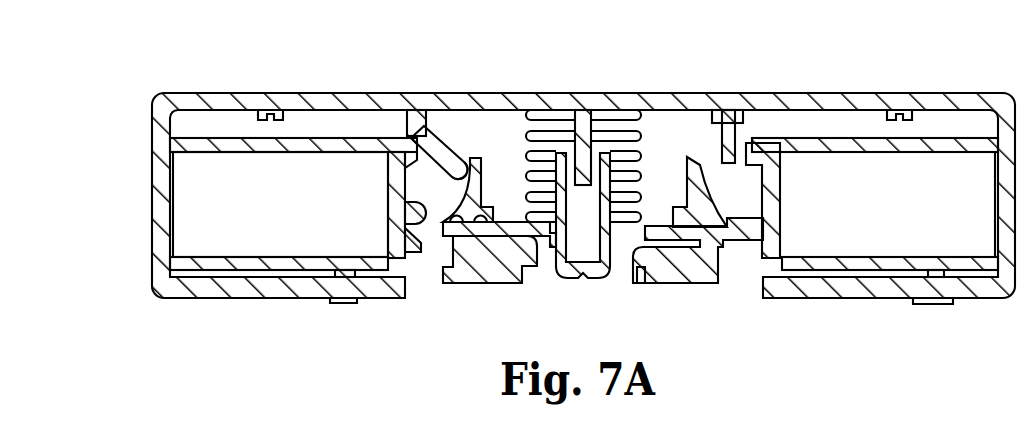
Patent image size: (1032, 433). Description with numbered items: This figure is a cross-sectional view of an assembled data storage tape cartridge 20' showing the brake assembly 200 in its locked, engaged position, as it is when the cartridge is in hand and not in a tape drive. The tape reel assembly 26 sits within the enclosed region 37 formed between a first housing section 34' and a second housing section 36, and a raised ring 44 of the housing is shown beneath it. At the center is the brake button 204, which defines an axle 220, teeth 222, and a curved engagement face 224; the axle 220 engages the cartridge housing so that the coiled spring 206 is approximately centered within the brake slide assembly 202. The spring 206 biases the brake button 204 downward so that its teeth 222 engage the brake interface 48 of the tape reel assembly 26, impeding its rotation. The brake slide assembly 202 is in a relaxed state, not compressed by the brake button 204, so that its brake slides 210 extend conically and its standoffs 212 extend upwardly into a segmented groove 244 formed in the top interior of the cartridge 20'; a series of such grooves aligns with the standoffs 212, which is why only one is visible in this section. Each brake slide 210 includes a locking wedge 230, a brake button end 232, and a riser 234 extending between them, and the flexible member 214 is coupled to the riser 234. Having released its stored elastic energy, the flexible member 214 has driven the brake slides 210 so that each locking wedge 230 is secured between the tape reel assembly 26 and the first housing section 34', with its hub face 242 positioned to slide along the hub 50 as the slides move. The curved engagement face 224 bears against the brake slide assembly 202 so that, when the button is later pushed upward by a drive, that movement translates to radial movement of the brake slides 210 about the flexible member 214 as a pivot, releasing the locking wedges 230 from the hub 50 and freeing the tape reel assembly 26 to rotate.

The data storage tape cartridge 20' is at (549, 194).
The first housing section 34' is at (217, 69).
The tape reel assembly 26 is at (298, 131).
The enclosed region 37 is at (186, 193).
The second housing section 36 is at (222, 299).
The raised ring 44 is at (390, 270).
The hub 50 is at (430, 226).
The brake interface 48 is at (430, 252).
The hub face 242 is at (407, 122).
The locking wedge 230 is at (430, 122).
The riser 234 is at (464, 141).
The brake button end 232 is at (488, 168).
The brake slide 210 is at (443, 217).
The teeth 222 is at (489, 238).
The brake button 204 is at (542, 212).
The axle 220 is at (584, 213).
The coiled spring 206 is at (622, 133).
The curved engagement face 224 is at (705, 201).
The brake assembly 200 is at (651, 188).
The segmented groove 244 is at (725, 108).
The flexible member 214 is at (722, 163).
The standoff 212 is at (746, 129).
The brake slide assembly 202 is at (743, 177).